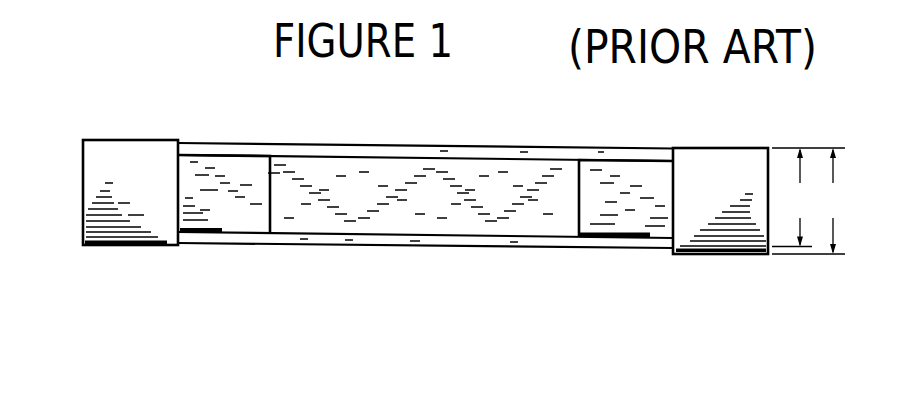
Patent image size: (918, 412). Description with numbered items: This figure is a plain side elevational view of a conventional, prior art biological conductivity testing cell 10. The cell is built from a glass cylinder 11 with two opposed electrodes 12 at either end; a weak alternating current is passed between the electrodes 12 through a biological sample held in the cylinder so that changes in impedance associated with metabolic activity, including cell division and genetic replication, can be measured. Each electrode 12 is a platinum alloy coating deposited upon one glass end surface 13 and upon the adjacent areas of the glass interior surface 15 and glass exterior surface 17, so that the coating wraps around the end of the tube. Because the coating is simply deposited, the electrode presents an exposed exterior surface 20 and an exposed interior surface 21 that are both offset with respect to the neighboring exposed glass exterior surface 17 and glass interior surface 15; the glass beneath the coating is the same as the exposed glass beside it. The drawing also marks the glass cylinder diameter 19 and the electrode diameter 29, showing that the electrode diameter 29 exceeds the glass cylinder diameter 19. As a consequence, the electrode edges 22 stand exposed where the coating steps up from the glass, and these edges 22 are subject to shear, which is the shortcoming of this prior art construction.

The conductivity testing cell 10 is at (176, 58).
The glass cylinder 11 is at (343, 153).
The electrode 12 is at (156, 150).
The glass end surface 13 is at (73, 255).
The glass interior surface 15 is at (453, 232).
The glass exterior surface 17 is at (480, 147).
The glass cylinder diameter 19 is at (808, 197).
The exposed exterior surface of electrode 20 is at (97, 140).
The exposed interior surface of electrode 21 is at (740, 148).
The electrode edge 22 is at (181, 143).
The electrode diameter 29 is at (809, 201).